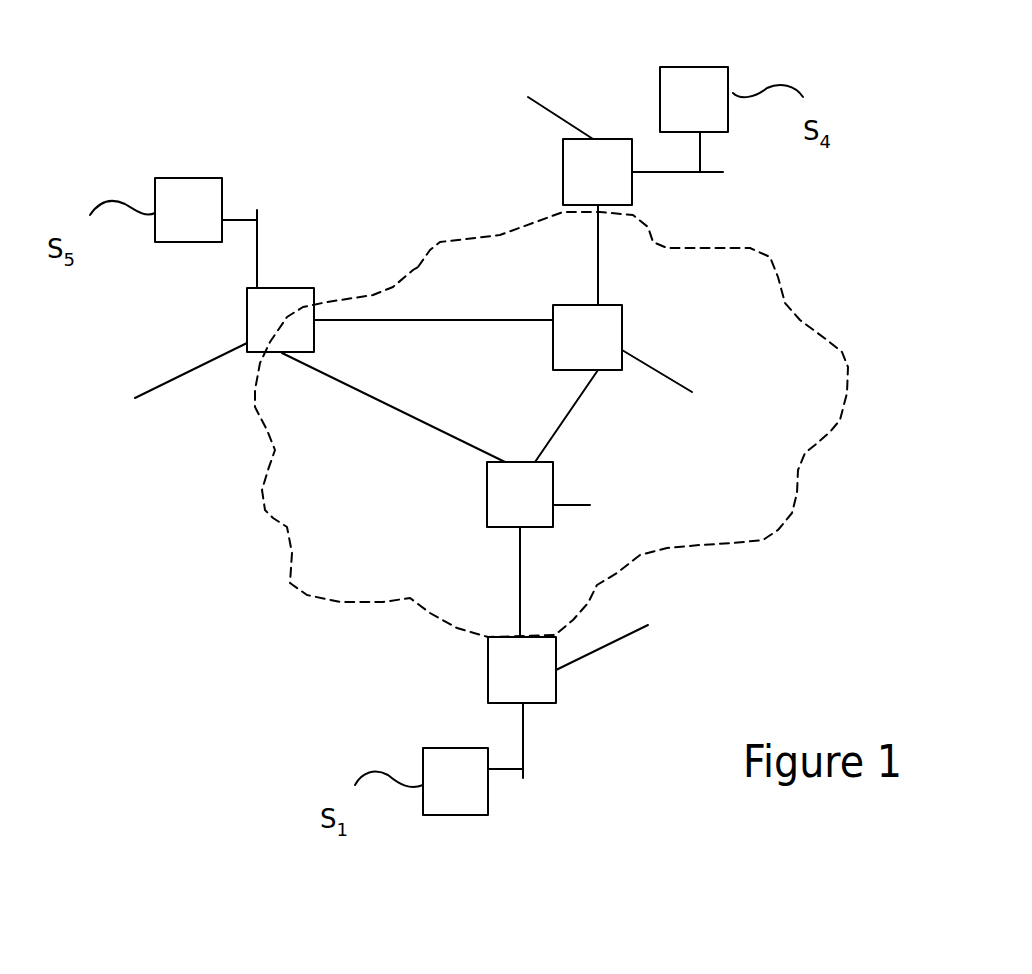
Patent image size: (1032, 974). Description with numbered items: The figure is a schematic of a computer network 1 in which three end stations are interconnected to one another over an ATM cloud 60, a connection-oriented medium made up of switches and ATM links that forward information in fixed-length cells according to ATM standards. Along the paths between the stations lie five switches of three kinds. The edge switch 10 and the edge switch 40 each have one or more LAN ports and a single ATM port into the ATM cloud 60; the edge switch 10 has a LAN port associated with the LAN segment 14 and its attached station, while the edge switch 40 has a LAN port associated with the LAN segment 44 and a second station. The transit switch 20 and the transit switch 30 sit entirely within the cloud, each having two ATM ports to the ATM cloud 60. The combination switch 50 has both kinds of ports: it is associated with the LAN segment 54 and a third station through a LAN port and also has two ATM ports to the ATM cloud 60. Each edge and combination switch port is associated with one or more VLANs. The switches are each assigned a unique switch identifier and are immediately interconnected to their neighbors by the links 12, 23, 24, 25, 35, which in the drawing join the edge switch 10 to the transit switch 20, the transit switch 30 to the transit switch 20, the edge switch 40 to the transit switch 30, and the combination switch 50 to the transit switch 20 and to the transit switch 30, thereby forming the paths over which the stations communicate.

The computer network 1 is at (182, 517).
The edge switch 10 is at (488, 673).
The link 12 is at (520, 562).
The LAN segment 14 is at (523, 750).
The transit switch 20 is at (487, 482).
The link 23 is at (562, 425).
The link 24 is at (598, 253).
The link 25 is at (397, 415).
The transit switch 30 is at (622, 322).
The link 35 is at (458, 327).
The edge switch 40 is at (563, 180).
The LAN segment 44 is at (657, 172).
The combination switch 50 is at (247, 313).
The LAN segment 54 is at (258, 230).
The ATM cloud 60 is at (803, 458).